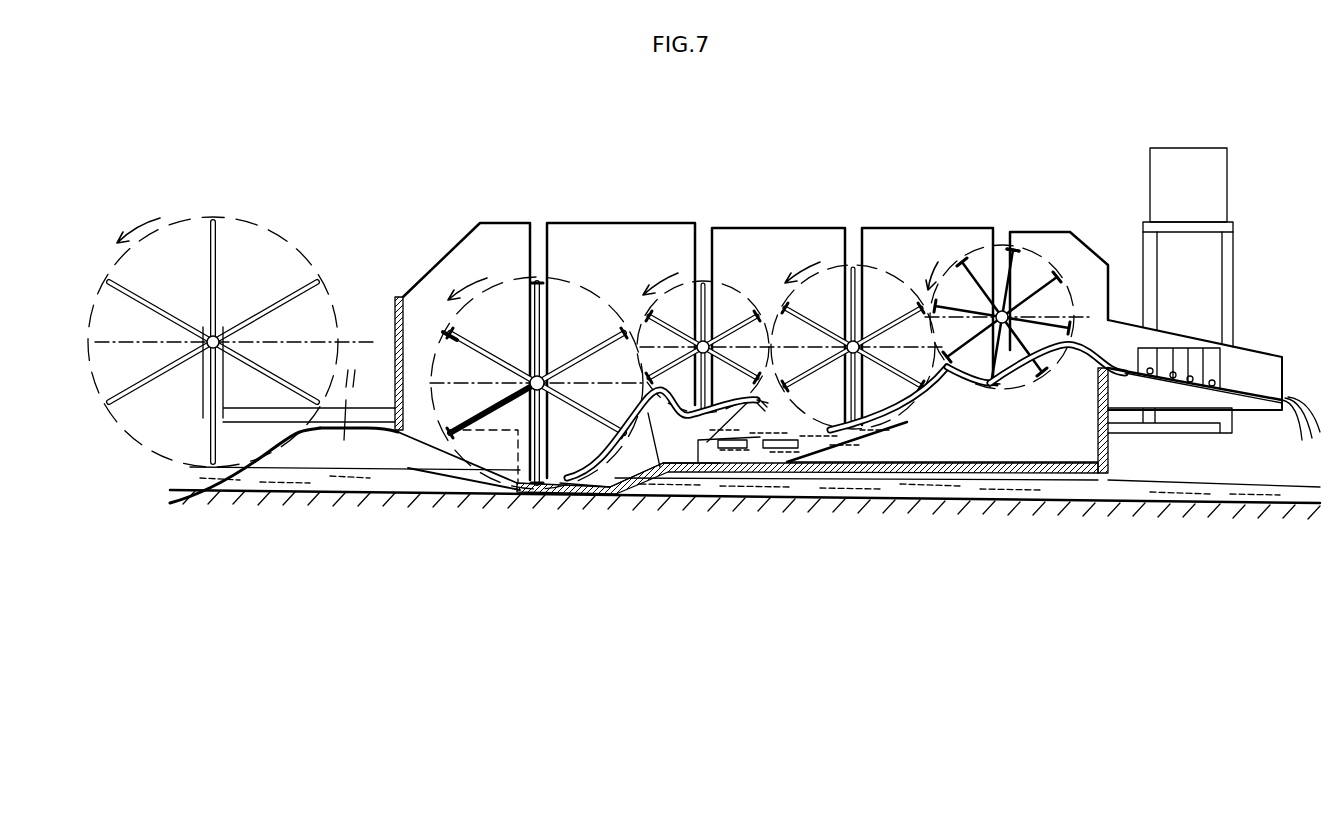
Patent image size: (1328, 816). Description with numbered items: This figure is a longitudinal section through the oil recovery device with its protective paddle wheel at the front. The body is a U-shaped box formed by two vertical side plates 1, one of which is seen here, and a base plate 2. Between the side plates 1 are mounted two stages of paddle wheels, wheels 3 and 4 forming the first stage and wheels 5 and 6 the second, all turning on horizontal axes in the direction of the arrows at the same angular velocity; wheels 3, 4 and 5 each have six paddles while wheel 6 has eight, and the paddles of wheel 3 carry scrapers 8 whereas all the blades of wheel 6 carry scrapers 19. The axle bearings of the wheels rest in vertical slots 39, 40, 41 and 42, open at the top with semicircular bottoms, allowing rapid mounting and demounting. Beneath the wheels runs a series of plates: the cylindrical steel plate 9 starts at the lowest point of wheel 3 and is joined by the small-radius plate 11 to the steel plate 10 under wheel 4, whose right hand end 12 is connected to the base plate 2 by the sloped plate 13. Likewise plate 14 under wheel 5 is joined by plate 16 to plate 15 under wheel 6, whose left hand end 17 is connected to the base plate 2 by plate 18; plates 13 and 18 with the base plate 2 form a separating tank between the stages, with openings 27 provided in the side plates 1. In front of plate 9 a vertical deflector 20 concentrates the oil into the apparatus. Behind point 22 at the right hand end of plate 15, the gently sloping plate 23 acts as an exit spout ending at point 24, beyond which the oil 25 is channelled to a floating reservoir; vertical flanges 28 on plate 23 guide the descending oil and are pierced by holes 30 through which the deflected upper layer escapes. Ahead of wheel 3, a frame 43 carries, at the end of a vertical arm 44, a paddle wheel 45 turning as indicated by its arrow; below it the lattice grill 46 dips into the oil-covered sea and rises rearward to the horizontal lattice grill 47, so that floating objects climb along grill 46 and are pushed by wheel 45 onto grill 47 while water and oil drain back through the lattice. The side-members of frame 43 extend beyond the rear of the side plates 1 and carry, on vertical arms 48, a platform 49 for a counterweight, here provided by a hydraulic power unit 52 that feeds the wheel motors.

The side plate 1 is at (770, 228).
The base plate 2 is at (1000, 474).
The paddle wheel 3 is at (477, 410).
The paddle wheel 4 is at (733, 323).
The paddle wheel 5 is at (910, 307).
The paddle wheel 6 is at (983, 275).
The scraper 8 is at (440, 342).
The steel plate 9 is at (592, 500).
The steel plate 10 is at (648, 493).
The connecting plate 11 is at (648, 413).
The right hand end of plate 10 12 is at (690, 415).
The plate 13 is at (705, 462).
The plate 14 is at (905, 428).
The plate 15 is at (1017, 390).
The joining plate 16 is at (957, 375).
The left hand end of plate 15 17 is at (838, 452).
The plate 18 is at (828, 452).
The scraper 19 is at (1015, 247).
The vertical deflector 20 is at (420, 452).
The point on right hand end of plate 15 22 is at (1066, 368).
The exit plate 23 is at (1120, 375).
The end point of plate 23 24 is at (1282, 398).
The oil 25 is at (1300, 438).
The opening 27 is at (787, 441).
The vertical flange 28 is at (1245, 348).
The hole 30 is at (1211, 379).
The vertical slot 39 is at (540, 227).
The vertical slot 40 is at (706, 226).
The vertical slot 41 is at (855, 228).
The vertical slot 42 is at (1000, 232).
The frame 43 is at (367, 417).
The vertical arm 44 is at (203, 393).
The paddle wheel 45 is at (220, 278).
The lattice grill 46 is at (225, 490).
The horizontal grill 47 is at (326, 431).
The vertical arm 48 is at (1228, 268).
The platform 49 is at (1233, 228).
The hydraulic power unit 52 is at (1187, 160).